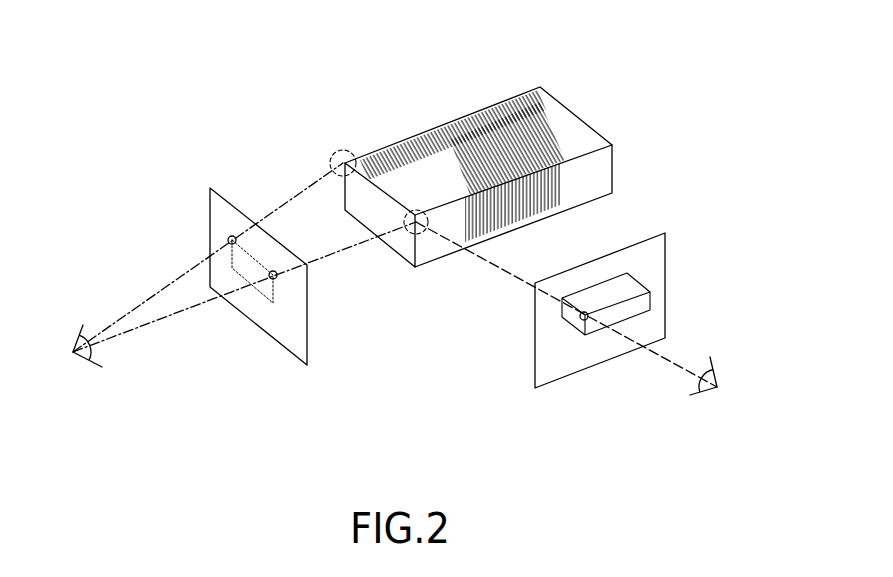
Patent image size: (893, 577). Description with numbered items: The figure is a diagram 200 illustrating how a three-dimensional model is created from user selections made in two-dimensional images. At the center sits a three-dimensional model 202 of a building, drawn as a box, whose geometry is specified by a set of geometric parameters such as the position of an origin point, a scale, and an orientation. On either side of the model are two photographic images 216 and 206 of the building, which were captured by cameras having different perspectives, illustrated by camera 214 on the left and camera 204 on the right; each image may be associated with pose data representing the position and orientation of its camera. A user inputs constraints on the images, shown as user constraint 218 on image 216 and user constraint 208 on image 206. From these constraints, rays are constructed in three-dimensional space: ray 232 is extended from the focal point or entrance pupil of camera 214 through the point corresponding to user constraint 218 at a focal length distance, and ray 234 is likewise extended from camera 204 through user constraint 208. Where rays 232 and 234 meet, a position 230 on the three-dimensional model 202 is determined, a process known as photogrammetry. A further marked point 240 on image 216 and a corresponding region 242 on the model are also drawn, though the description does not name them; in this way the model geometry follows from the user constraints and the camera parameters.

The diagram 200 is at (665, 25).
The three-dimensional model 202 is at (463, 117).
The camera 204 is at (722, 399).
The photographic image 206 is at (667, 258).
The user constraint 208 is at (581, 318).
The camera 214 is at (73, 355).
The photographic image 216 is at (210, 205).
The user constraint 218 is at (273, 277).
The position 230 is at (419, 210).
The ray 232 is at (175, 315).
The ray 234 is at (503, 270).
The first pixel 240 is at (232, 237).
The first light emission region 242 is at (343, 150).